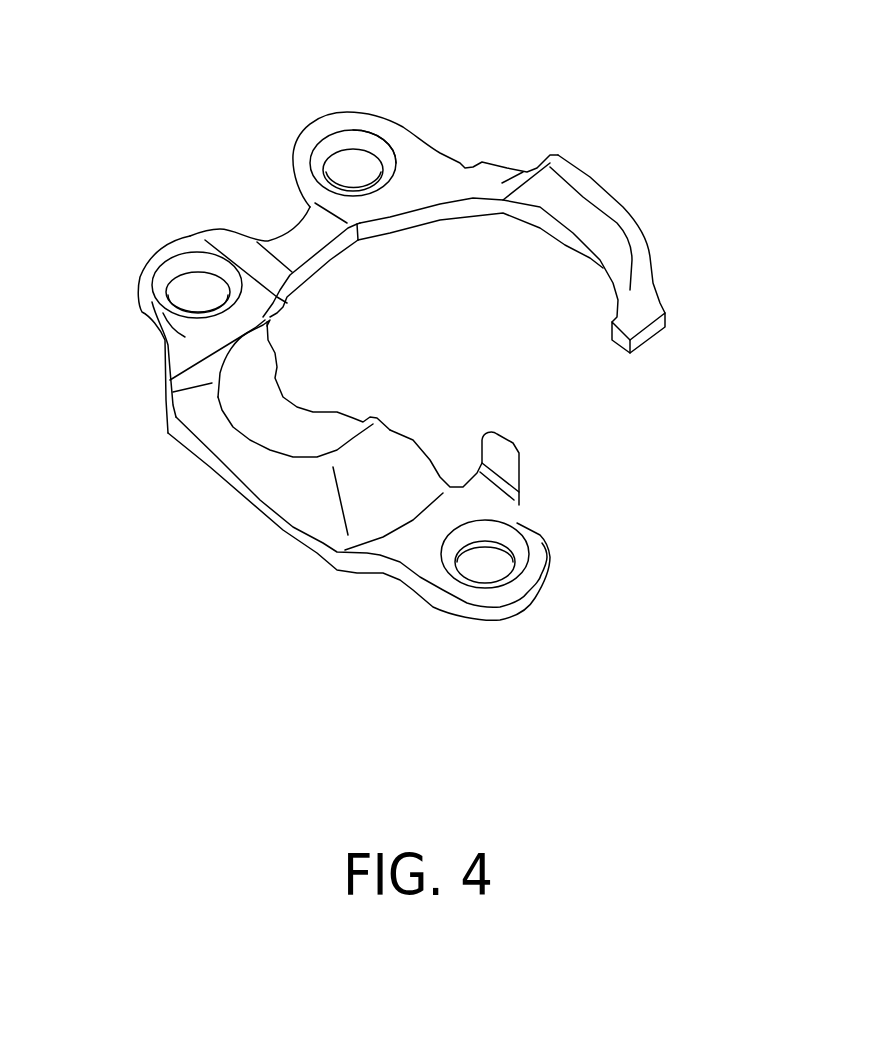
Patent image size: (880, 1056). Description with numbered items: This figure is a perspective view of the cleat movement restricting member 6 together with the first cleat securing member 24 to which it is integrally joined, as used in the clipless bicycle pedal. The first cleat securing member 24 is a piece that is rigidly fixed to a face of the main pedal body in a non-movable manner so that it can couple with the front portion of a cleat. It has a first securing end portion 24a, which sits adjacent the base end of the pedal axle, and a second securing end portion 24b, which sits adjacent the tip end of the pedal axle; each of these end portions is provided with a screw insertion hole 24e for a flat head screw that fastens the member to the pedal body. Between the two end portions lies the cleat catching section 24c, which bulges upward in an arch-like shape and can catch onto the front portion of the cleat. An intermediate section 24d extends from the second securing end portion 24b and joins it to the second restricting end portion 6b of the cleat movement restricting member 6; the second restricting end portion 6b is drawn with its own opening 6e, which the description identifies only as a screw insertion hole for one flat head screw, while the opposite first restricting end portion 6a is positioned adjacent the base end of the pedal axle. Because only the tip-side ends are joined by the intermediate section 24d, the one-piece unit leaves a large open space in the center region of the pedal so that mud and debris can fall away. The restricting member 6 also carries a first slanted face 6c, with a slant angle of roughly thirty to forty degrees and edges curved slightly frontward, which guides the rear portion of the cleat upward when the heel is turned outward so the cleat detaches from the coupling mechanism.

The cleat movement restricting member 6 is at (546, 178).
The first restricting end portion 6a is at (647, 313).
The second restricting end portion 6b is at (483, 173).
The first slanted face 6c is at (570, 207).
The hole 6e is at (363, 157).
The first cleat securing member 24 is at (344, 346).
The first securing end portion 24a is at (420, 538).
The second securing end portion 24b is at (163, 312).
The cleat catching section 24c is at (283, 413).
The intermediate section 24d is at (300, 242).
The screw insertion hole 24e is at (188, 283).